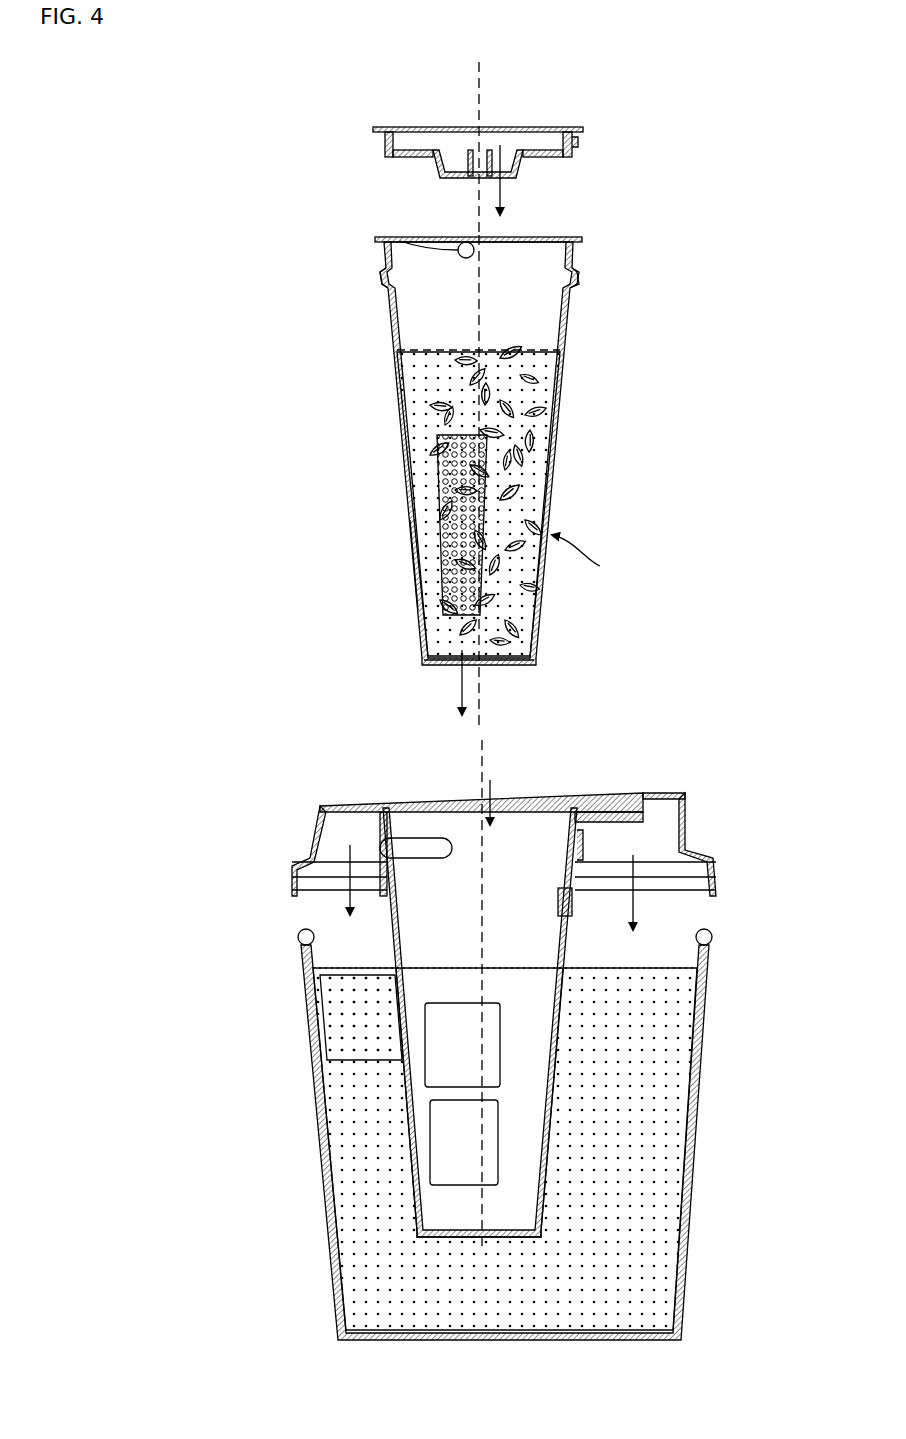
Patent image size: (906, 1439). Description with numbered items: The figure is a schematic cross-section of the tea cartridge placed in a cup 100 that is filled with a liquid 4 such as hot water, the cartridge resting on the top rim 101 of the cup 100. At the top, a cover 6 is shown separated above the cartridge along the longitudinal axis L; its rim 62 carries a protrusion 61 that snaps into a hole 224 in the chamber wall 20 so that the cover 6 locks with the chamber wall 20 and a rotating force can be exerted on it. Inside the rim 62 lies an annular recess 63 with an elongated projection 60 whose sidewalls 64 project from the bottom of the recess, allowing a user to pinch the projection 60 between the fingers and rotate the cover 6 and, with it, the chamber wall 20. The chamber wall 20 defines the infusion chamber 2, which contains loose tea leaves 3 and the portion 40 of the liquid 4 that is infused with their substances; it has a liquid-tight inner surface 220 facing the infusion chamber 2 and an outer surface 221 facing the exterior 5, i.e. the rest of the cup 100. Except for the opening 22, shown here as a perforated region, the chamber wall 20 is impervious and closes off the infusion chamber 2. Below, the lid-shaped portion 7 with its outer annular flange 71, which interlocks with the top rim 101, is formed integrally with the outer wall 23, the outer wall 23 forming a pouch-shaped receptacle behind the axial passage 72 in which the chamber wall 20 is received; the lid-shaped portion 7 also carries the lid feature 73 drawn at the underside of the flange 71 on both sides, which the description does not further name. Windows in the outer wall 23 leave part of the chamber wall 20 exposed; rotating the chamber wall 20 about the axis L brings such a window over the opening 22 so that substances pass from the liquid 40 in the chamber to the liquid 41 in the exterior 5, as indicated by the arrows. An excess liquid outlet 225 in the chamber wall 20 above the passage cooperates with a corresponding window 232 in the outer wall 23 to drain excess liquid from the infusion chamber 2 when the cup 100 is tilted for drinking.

The infusion chamber 2 is at (479, 460).
The tea leaves 3 is at (405, 405).
The liquid 4 is at (423, 652).
The exterior 5 is at (672, 1265).
The cover 6 is at (486, 137).
The lid-shaped portion 7 is at (506, 853).
The chamber wall 20 is at (410, 462).
The opening 22 is at (418, 568).
The outer wall 23 is at (515, 1022).
The portion of the liquid in the infusion chamber 40 is at (412, 515).
The portion of the liquid in the exterior 41 is at (360, 993).
The elongated projection 60 is at (481, 150).
The protrusion 61 is at (578, 143).
The rim 62 is at (576, 128).
The annular recess 63 is at (505, 165).
The sidewalls 64 is at (468, 165).
The outer annular flange 71 is at (705, 855).
The axial passage 72 is at (488, 802).
The lid seal ribs 73 is at (718, 880).
The cup 100 is at (538, 1134).
The top rim 101 is at (712, 936).
The inner surface 220 is at (530, 427).
The outer surface 221 is at (596, 558).
The hole 224 is at (425, 232).
The excess liquid outlet 225 is at (563, 333).
The window 232 is at (577, 918).
The longitudinal axis L is at (478, 108).